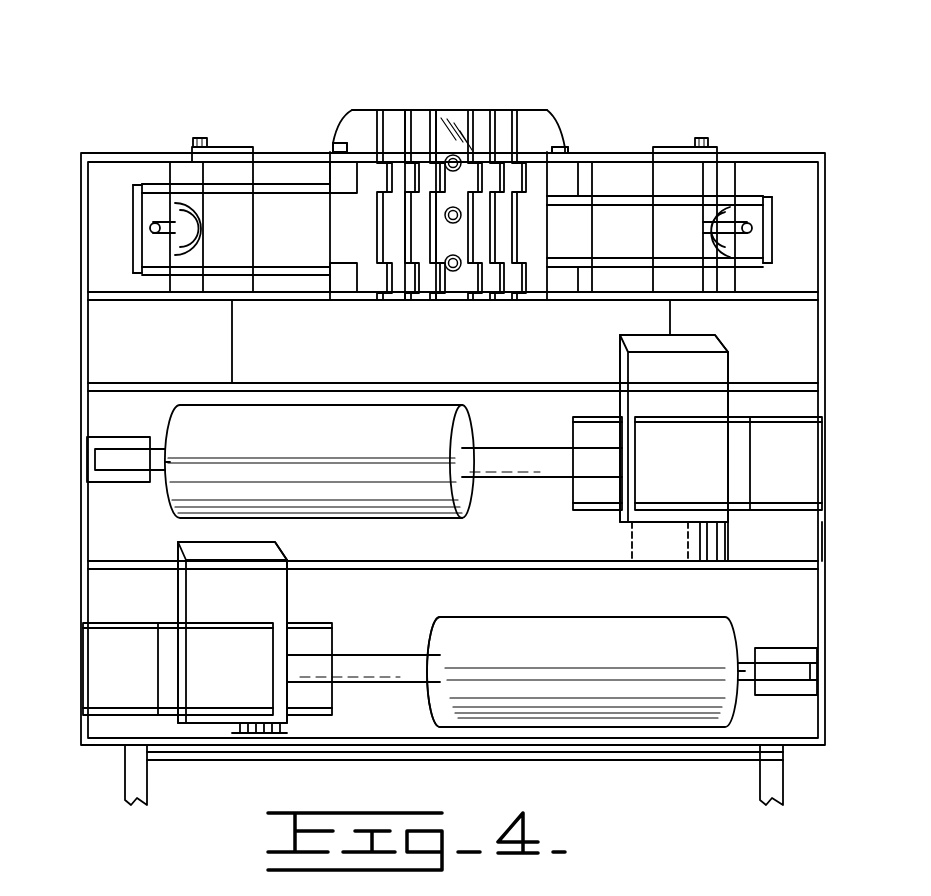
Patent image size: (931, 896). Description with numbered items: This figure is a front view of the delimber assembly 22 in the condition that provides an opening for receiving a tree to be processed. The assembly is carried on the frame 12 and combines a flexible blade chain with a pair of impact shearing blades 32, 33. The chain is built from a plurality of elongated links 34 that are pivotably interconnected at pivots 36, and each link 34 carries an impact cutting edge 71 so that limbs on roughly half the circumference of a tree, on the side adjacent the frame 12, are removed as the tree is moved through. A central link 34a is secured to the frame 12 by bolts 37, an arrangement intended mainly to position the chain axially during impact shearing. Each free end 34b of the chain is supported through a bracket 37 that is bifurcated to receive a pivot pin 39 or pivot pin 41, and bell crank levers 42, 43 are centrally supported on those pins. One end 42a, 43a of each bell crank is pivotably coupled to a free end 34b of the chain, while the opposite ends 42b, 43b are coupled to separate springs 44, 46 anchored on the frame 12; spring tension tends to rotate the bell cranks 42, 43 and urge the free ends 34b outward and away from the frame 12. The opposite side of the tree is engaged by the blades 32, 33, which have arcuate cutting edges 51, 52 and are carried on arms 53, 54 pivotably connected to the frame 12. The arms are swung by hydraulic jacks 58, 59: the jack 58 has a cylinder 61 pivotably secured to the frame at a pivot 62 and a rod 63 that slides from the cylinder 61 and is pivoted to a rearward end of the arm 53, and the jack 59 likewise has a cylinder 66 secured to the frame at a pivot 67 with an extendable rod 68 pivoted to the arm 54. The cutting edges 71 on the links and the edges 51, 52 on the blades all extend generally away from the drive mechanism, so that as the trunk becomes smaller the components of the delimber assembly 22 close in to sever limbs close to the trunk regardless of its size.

The frame 12 is at (583, 753).
The delimber assembly 22 is at (554, 59).
The impact shearing blade 32 is at (697, 400).
The impact shearing blade 33 is at (242, 609).
The elongated link 34 is at (397, 297).
The central link 34a is at (447, 297).
The free end of the chain 34b is at (330, 137).
The pivotable interconnection 36 is at (415, 297).
The bolts / bracket 37 is at (802, 157).
The pivot pin 39 is at (693, 175).
The pivot pin 41 is at (247, 170).
The bell crank lever 42 is at (760, 197).
The lever end 42a is at (637, 200).
The lever end 42b is at (764, 263).
The bell crank lever 43 is at (172, 185).
The lever end 43a is at (310, 192).
The lever end 43b is at (140, 267).
The spring 44 is at (749, 228).
The spring 46 is at (188, 257).
The arcuate cutting edge 51 is at (714, 344).
The arcuate cutting edge 52 is at (282, 553).
The arm 53 is at (807, 487).
The arm 54 is at (140, 686).
The hydraulic jack 58 is at (432, 522).
The hydraulic jack 59 is at (535, 611).
The cylinder 61 is at (333, 451).
The pivotable securement 62 is at (140, 465).
The rod 63 is at (512, 455).
The cylinder 66 is at (610, 657).
The pivotable securement 67 is at (772, 663).
The rod 68 is at (365, 660).
The impact cutting edge 71 is at (505, 115).